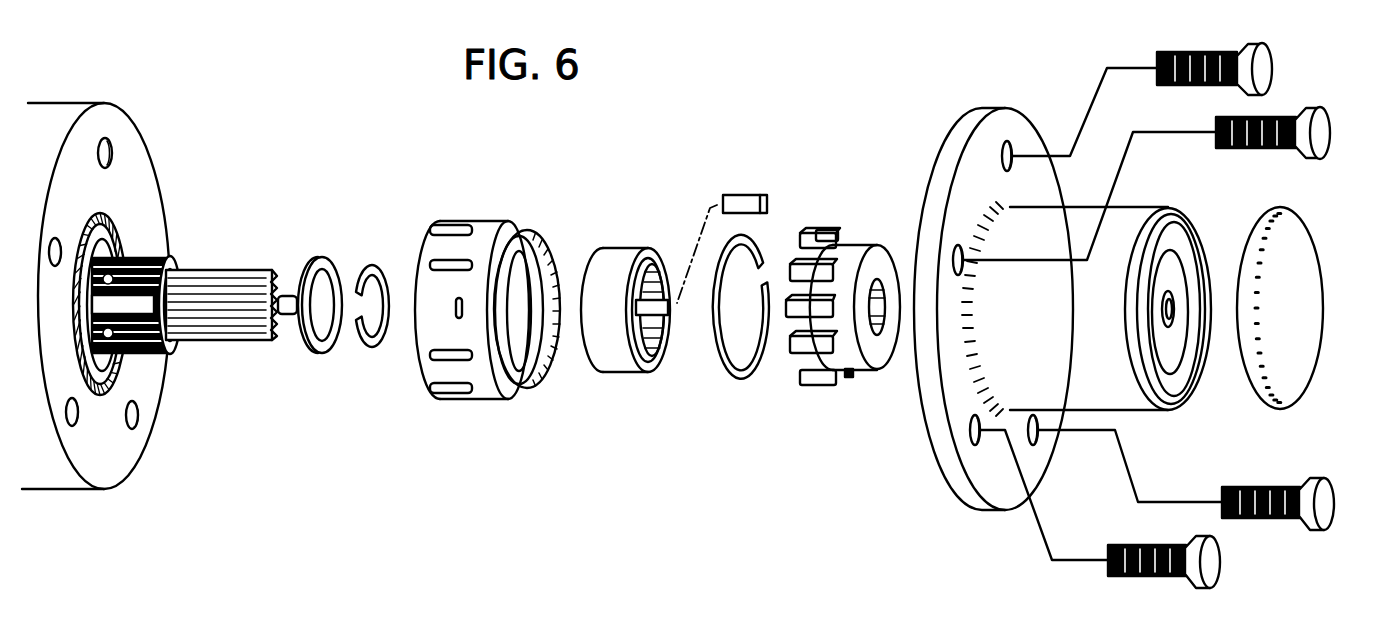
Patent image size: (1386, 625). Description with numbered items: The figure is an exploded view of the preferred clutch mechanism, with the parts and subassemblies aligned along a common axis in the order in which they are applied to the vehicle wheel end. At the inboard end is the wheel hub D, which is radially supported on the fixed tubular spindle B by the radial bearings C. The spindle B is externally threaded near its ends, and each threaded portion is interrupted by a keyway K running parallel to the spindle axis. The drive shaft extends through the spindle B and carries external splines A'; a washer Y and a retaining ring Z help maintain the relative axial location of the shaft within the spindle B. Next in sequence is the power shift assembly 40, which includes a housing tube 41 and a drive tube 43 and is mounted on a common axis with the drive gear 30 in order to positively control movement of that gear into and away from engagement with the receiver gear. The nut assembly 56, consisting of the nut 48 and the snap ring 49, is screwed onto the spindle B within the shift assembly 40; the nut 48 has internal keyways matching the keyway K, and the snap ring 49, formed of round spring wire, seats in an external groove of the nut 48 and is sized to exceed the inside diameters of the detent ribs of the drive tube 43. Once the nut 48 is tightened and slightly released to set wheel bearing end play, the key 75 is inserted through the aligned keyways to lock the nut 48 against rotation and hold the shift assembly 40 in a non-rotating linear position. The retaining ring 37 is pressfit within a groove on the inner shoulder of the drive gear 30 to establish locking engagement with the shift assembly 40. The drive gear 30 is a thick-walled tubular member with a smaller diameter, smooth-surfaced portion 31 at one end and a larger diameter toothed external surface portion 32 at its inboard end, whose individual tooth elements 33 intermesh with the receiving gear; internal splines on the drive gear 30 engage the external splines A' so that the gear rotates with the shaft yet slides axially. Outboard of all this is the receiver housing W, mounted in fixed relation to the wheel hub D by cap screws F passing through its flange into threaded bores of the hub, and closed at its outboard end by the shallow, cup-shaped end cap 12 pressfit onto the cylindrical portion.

The wheel hub D is at (146, 130).
The radial bearings C is at (118, 224).
The spindle B is at (146, 362).
The keyway K is at (148, 306).
The external splines A' is at (231, 329).
The washer Y is at (323, 258).
The retaining ring Z is at (372, 348).
The power shift assembly 40 is at (487, 403).
The housing tube 41 is at (490, 213).
The drive tube 43 is at (550, 246).
The nut 48 is at (605, 250).
The snap ring 49 is at (638, 252).
The nut assembly 56 is at (628, 376).
The key 75 is at (746, 196).
The retaining ring 37 is at (735, 380).
The tooth elements 33 is at (780, 347).
The toothed external surface portion 32 is at (826, 232).
The smooth-surfaced portion 31 is at (860, 246).
The drive gear 30 is at (856, 380).
The receiver housing W is at (980, 100).
The end cap 12 is at (1300, 273).
The cap screws F is at (1272, 518).